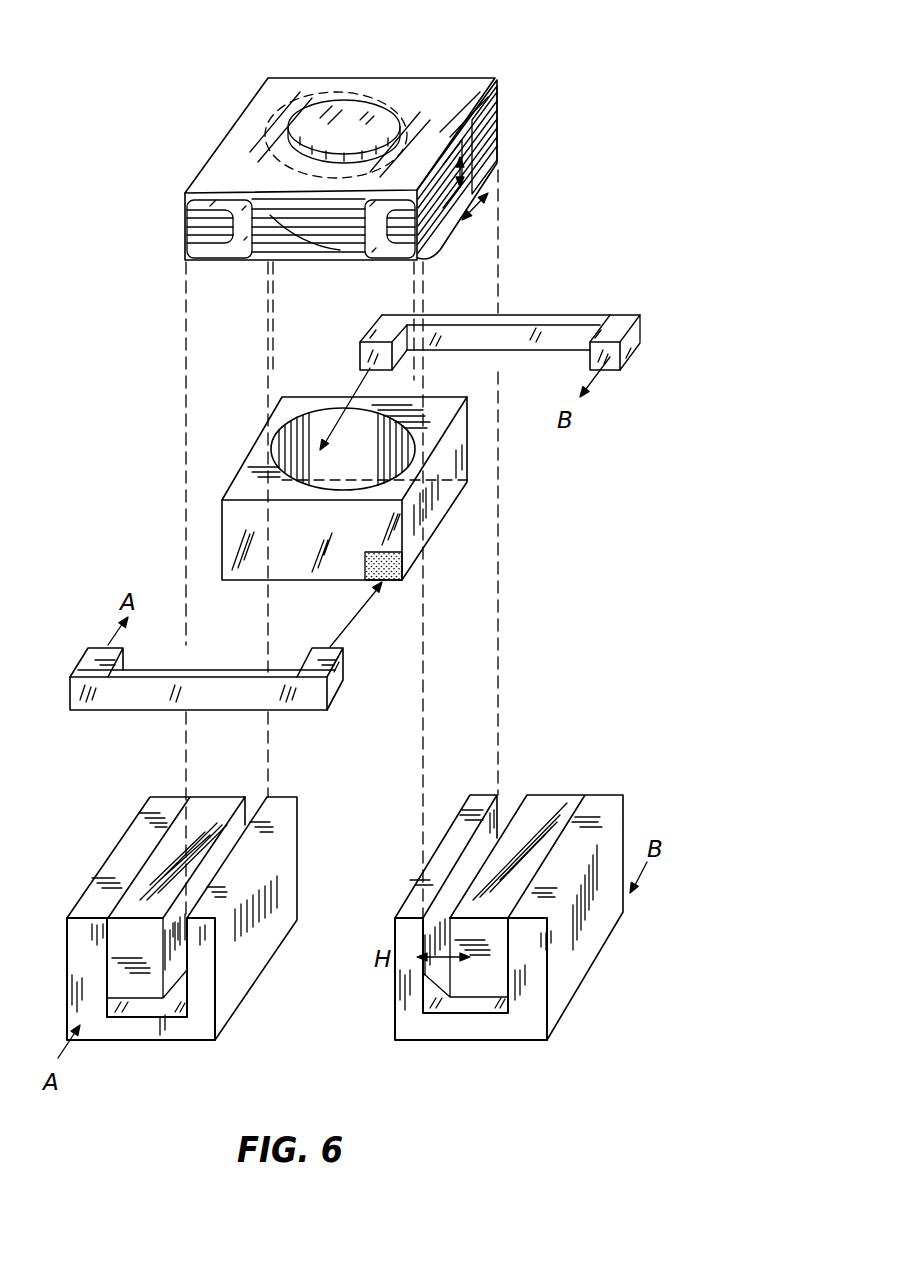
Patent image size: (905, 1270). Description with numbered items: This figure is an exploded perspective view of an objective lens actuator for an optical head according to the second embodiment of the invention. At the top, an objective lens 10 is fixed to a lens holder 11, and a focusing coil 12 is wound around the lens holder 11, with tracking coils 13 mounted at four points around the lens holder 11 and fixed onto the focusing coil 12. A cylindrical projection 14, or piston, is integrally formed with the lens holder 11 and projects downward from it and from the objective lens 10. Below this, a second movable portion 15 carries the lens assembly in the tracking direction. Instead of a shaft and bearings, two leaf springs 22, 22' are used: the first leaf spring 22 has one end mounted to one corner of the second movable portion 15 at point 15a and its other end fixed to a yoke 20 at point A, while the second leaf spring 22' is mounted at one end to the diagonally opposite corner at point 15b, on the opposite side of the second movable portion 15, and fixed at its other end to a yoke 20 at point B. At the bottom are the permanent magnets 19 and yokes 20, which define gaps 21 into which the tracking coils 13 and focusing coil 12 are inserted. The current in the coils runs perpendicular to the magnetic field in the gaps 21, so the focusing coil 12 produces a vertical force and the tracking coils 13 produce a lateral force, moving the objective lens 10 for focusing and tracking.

The objective lens 10 is at (340, 118).
The lens holder 11 is at (452, 88).
The focusing coil 12 is at (303, 257).
The tracking coils 13 is at (210, 260).
The cylindrical projection 14 is at (277, 173).
The second movable portion 15 is at (438, 503).
The mounting point 15a is at (392, 563).
The mounting point 15b is at (330, 455).
The permanent magnets 19 is at (553, 805).
The yokes 20 is at (420, 893).
The gaps 21 is at (483, 847).
The first leaf spring 22 is at (206, 703).
The second leaf spring 22' is at (500, 328).